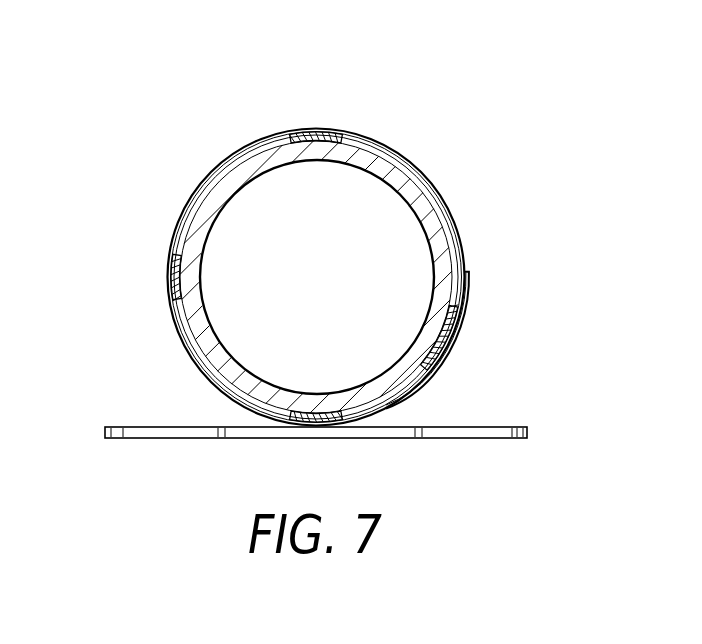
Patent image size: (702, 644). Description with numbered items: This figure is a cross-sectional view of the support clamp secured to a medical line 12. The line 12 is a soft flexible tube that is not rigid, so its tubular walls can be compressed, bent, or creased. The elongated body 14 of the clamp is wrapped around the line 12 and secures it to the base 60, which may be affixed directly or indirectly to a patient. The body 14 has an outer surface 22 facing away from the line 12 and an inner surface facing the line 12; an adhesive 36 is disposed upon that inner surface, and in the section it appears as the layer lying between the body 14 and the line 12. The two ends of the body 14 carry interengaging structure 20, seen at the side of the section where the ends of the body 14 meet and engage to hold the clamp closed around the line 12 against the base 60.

The medical line 12 is at (194, 196).
The elongated body 14 is at (397, 176).
The interengaging structure 20 is at (467, 272).
The outer surface 22 is at (173, 286).
The adhesive 36 is at (303, 128).
The base 60 is at (498, 427).